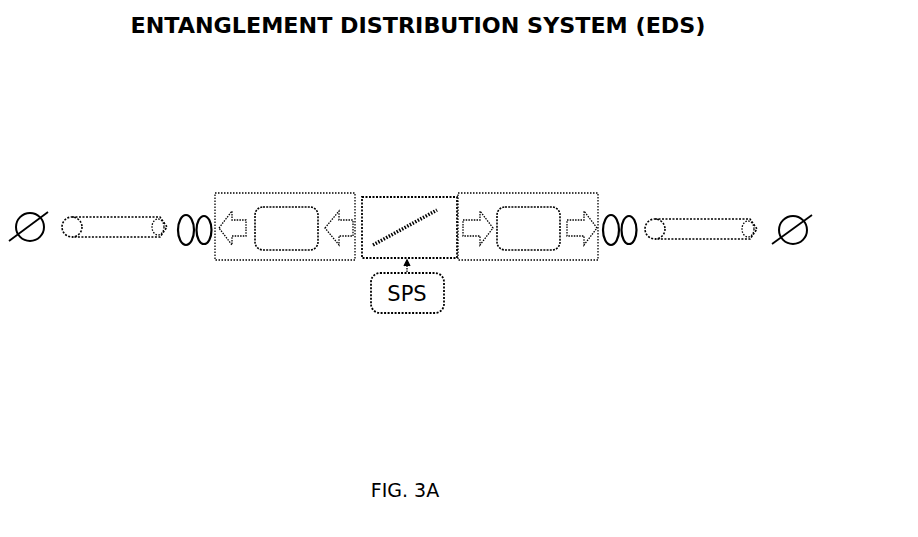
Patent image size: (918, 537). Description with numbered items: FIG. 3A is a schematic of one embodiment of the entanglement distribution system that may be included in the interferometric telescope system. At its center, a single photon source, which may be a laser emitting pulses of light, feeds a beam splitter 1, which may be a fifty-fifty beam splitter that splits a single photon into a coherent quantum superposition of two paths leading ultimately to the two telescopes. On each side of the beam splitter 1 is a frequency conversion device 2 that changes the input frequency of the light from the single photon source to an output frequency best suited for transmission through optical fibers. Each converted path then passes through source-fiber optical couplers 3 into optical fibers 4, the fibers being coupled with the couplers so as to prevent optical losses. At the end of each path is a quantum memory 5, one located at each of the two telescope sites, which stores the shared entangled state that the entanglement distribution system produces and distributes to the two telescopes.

The beam splitter 1 is at (422, 196).
The frequency conversion device 2 is at (272, 194).
The source-fiber optical coupler 3 is at (195, 201).
The optical fiber 4 is at (110, 209).
The quantum memory 5 is at (30, 200).